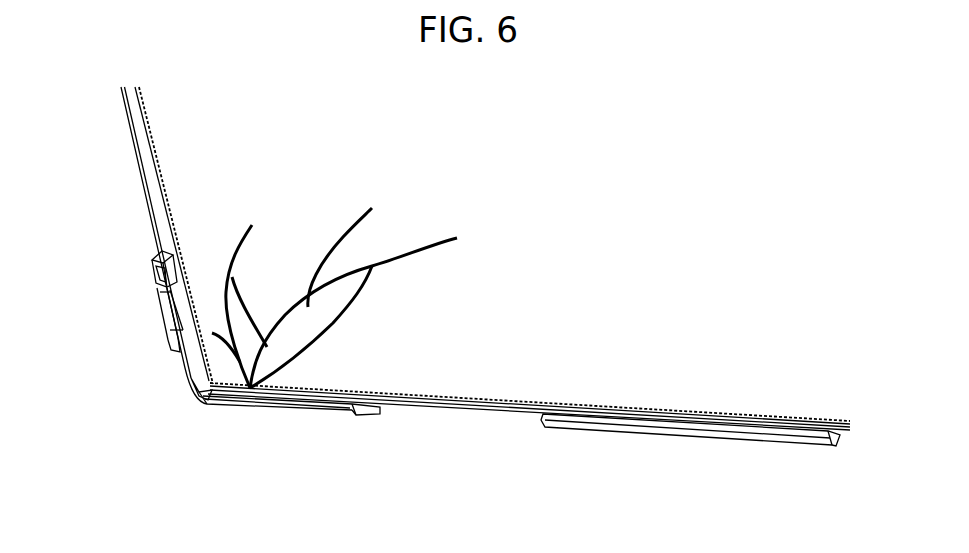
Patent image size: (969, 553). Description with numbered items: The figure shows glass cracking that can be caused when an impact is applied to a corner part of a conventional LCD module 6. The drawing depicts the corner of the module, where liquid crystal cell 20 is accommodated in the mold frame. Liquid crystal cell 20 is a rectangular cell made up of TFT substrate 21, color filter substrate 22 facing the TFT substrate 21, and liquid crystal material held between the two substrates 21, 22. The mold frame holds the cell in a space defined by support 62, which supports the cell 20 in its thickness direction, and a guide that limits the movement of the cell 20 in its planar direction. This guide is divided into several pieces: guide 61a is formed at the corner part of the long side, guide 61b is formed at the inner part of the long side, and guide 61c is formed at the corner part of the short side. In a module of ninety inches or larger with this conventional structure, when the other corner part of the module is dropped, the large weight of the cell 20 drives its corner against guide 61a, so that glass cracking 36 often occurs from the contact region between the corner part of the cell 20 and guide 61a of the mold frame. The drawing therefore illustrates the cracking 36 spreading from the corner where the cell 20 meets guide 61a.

The LCD module 6 is at (116, 180).
The liquid crystal cell 20 is at (529, 444).
The TFT substrate 21 is at (507, 452).
The color filter substrate 22 is at (462, 381).
The glass cracking 36 is at (388, 217).
The guide 61a is at (243, 396).
The guide 61b is at (603, 420).
The guide 61c is at (183, 351).
The support 62 is at (168, 222).